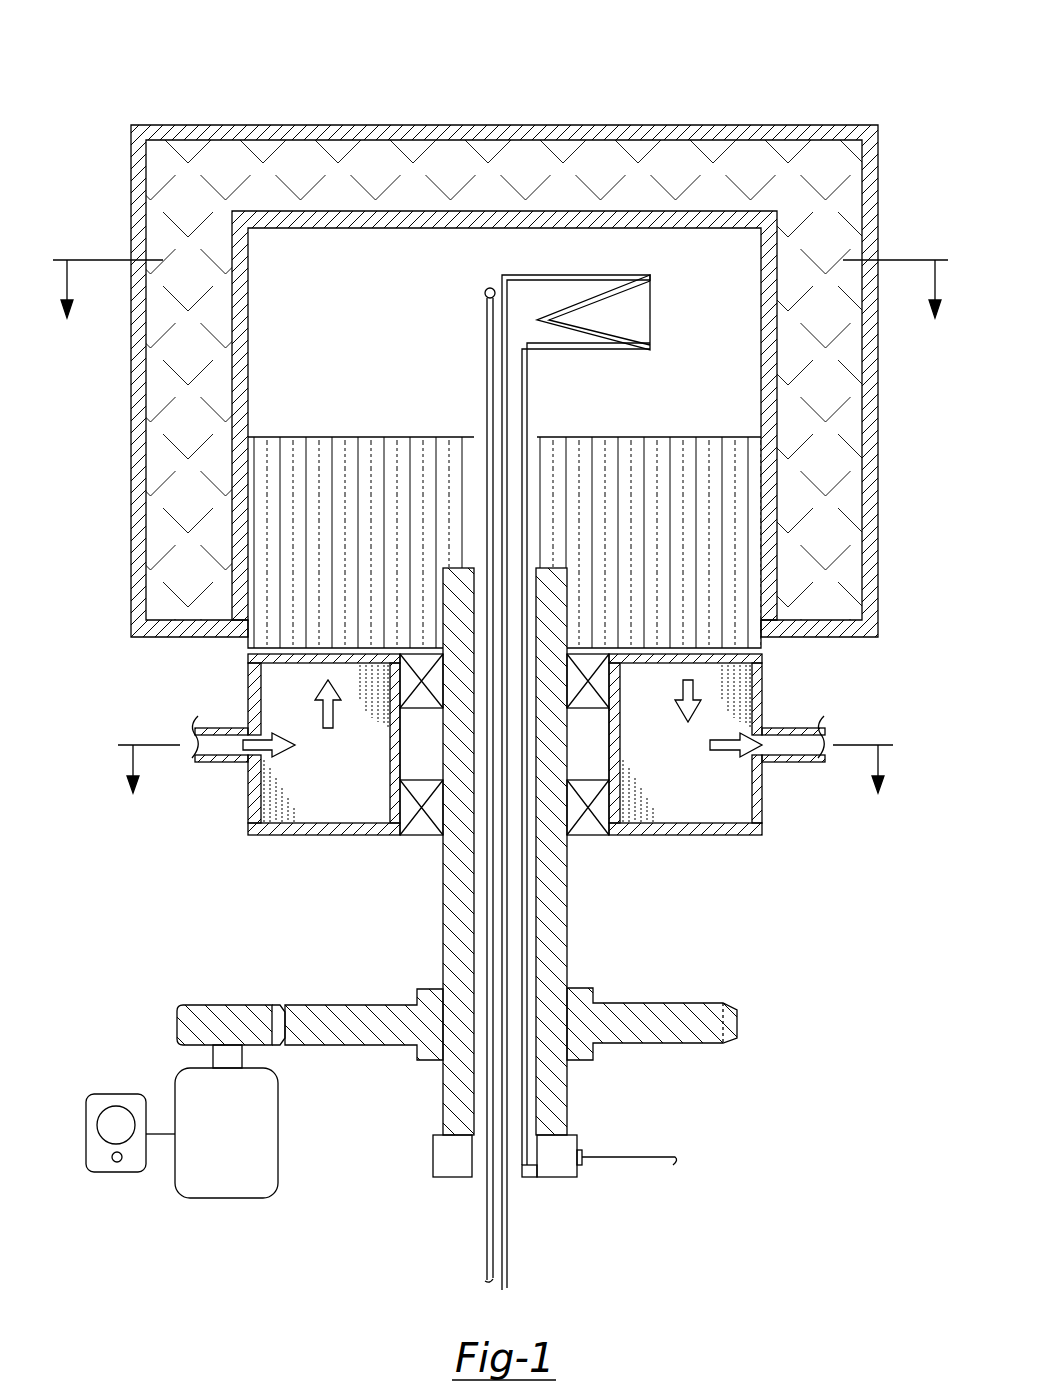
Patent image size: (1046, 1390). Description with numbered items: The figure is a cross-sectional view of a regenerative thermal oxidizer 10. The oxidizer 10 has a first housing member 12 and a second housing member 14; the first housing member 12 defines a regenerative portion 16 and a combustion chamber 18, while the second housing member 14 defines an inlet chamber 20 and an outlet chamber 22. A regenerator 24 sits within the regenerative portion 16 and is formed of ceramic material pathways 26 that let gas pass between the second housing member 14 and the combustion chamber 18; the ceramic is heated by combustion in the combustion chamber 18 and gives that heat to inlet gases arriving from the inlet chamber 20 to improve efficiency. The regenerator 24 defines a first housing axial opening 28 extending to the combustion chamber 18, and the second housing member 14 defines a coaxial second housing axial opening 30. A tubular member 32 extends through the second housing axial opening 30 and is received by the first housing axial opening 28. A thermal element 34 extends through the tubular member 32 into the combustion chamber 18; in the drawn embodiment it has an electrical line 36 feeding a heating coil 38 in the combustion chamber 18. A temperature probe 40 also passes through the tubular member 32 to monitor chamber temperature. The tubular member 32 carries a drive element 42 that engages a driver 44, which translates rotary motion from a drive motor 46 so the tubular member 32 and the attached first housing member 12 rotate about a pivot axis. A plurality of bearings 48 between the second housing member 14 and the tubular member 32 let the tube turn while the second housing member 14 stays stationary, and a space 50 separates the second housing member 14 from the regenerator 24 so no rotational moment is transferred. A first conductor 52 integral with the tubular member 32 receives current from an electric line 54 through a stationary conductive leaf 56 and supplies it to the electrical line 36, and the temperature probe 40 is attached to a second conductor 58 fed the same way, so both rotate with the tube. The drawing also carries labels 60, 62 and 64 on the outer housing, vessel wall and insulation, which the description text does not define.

The regenerative thermal oxidizer 10 is at (277, 106).
The first housing member 12 is at (587, 429).
The second housing member 14 is at (280, 744).
The regenerative portion 16 is at (595, 513).
The combustion chamber 18 is at (392, 277).
The inlet chamber 20 is at (338, 777).
The outlet chamber 22 is at (695, 777).
The regenerator 24 is at (282, 437).
The ceramic material pathways 26 is at (390, 465).
The first housing axial opening 28 is at (530, 437).
The second housing axial opening 30 is at (566, 835).
The tubular member 32 is at (443, 916).
The thermal element 34 is at (596, 762).
The electrical line 36 is at (528, 966).
The heating coil 38 is at (610, 300).
The temperature probe 40 is at (488, 322).
The drive element 42 is at (372, 1005).
The driver 44 is at (223, 1005).
The drive motor 46 is at (232, 1136).
The bearings 48 is at (430, 828).
The space 50 is at (773, 738).
The first conductor 52 is at (565, 1171).
The electric line 54 is at (658, 1157).
The conductive leaf 56 is at (582, 1157).
The second conductor 58 is at (530, 1178).
The outer housing 60 is at (878, 188).
The vessel wall 62 is at (250, 320).
The insulation 64 is at (528, 172).